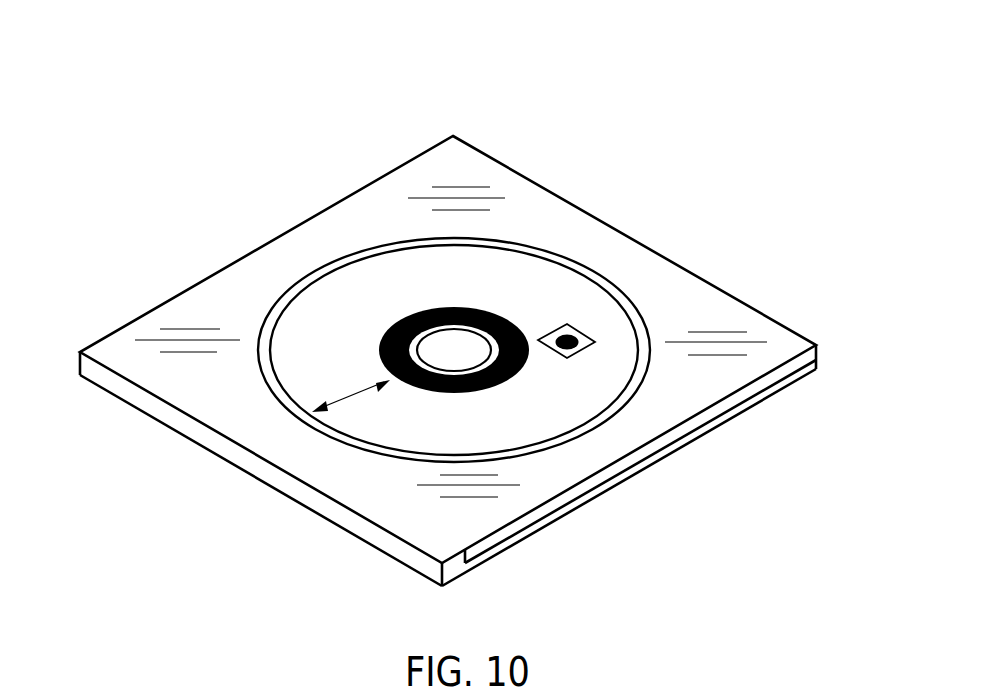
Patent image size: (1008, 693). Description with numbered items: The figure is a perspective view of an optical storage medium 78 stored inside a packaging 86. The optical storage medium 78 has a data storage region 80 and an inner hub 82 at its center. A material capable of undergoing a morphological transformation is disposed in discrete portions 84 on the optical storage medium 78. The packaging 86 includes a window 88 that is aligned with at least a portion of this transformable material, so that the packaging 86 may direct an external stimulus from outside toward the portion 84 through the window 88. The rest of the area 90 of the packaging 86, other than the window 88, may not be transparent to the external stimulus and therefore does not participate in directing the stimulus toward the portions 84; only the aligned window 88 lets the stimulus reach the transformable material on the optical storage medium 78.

The optical storage medium 78 is at (533, 265).
The data storage region 80 is at (348, 393).
The inner hub 82 is at (395, 325).
The discrete portions of material capable of undergoing a morphological transformati 84 is at (585, 347).
The packaging 86 is at (778, 320).
The window 88 is at (580, 330).
The rest of the area of the packaging 90 is at (457, 153).